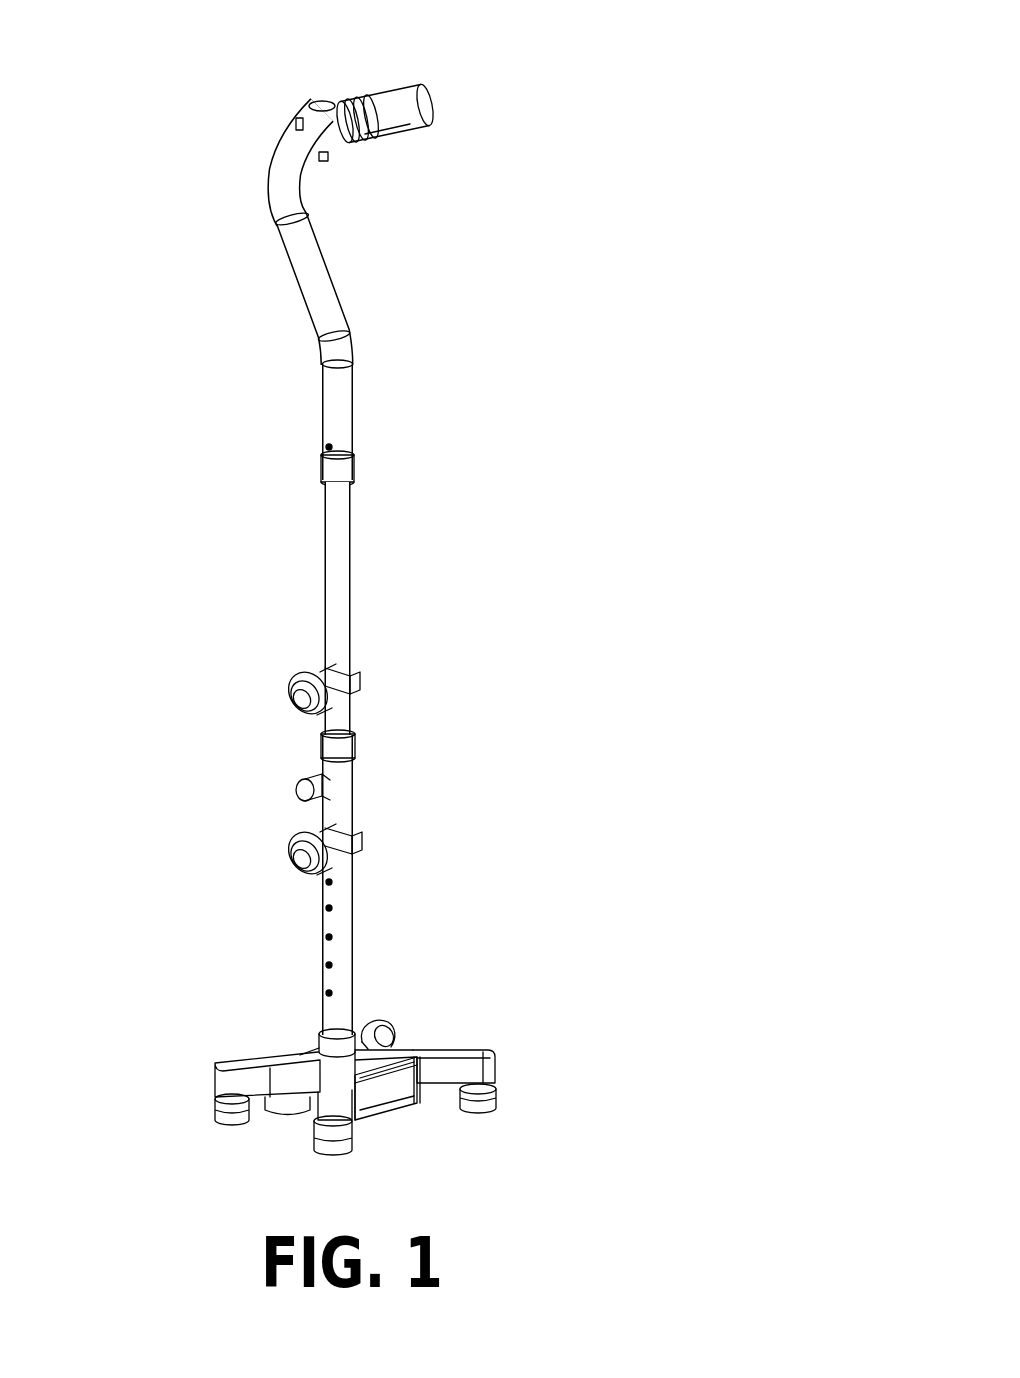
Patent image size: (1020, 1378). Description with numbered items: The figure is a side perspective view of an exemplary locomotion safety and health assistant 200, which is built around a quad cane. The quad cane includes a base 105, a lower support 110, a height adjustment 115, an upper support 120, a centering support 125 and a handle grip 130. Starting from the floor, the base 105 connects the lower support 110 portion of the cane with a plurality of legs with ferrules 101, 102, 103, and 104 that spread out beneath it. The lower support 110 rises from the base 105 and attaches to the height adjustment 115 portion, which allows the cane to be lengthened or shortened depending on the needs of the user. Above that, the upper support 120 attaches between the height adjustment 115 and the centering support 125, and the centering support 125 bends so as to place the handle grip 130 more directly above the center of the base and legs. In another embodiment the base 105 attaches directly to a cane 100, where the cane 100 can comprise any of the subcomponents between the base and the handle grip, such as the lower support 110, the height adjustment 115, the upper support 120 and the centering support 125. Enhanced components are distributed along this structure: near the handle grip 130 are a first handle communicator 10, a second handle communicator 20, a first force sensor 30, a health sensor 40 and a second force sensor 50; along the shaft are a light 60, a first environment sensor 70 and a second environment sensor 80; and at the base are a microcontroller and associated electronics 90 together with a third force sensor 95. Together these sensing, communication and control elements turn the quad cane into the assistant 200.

The first handle communicator 10 is at (413, 85).
The second handle communicator 20 is at (413, 122).
The first force sensor 30 is at (325, 157).
The health sensor 40 is at (314, 102).
The second force sensor 50 is at (296, 125).
The light 60 is at (261, 773).
The first environment sensor 70 is at (242, 637).
The second environment sensor 80 is at (257, 897).
The microcontroller and associated electronics 90 is at (408, 1126).
The third force sensor 95 is at (497, 1090).
The cane 100 is at (637, 359).
The leg with ferrule 101 is at (401, 993).
The leg with ferrule 102 is at (526, 1048).
The leg with ferrule 103 is at (190, 1041).
The leg with ferrule 104 is at (274, 1170).
The base 105 is at (478, 1010).
The lower support 110 is at (350, 947).
The height adjustment 115 is at (350, 612).
The upper support 120 is at (353, 407).
The centering support 125 is at (268, 180).
The handle grip 130 is at (462, 88).
The locomotion safety and health assistant 200 is at (603, 1249).